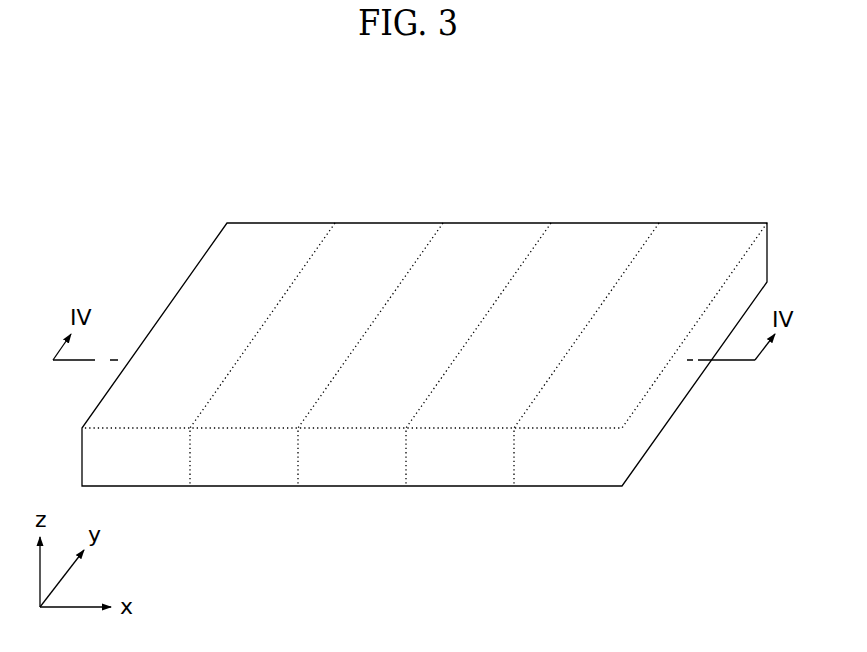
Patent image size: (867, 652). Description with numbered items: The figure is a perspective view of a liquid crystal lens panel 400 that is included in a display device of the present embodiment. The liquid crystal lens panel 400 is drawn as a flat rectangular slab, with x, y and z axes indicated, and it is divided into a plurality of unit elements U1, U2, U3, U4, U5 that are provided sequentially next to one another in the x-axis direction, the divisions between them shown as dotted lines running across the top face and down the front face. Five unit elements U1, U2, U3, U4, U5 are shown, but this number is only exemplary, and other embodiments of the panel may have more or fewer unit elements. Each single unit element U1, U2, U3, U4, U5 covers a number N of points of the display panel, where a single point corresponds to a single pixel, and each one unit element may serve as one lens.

The liquid crystal lens panel 400 is at (392, 223).
The unit element U1 is at (210, 326).
The unit element U2 is at (318, 326).
The unit element U3 is at (426, 326).
The unit element U4 is at (534, 326).
The unit element U5 is at (642, 326).